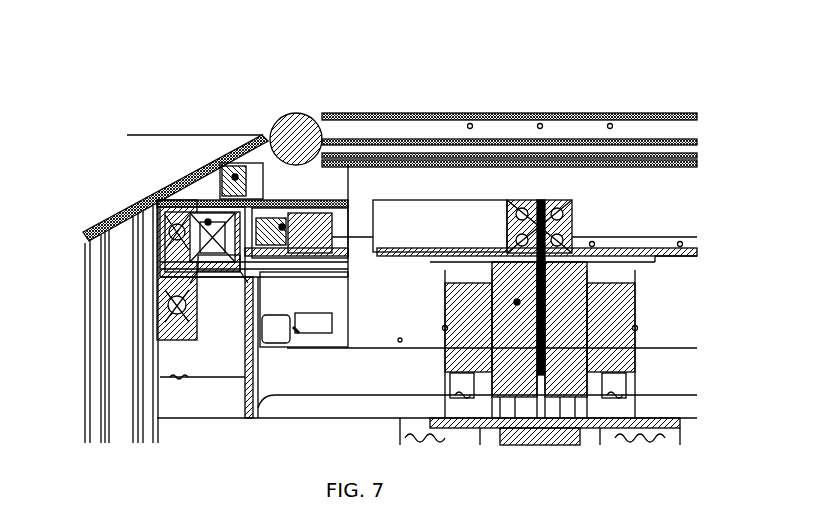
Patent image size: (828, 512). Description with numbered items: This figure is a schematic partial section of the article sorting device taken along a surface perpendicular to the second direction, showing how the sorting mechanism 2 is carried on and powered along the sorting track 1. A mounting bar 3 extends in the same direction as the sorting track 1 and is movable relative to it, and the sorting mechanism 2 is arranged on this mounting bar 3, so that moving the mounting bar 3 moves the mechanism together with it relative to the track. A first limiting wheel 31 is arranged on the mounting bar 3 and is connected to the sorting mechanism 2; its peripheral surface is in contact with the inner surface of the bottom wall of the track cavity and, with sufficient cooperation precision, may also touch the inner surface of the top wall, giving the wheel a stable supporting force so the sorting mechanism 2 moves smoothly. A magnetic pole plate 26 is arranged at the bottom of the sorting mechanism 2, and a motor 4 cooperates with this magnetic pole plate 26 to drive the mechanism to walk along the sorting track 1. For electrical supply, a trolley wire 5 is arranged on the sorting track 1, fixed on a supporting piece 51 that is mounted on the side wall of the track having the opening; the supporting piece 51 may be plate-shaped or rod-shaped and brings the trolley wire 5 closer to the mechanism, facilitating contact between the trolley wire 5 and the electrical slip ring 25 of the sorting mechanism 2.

The sorting track 1 is at (150, 197).
The sorting mechanism 2 is at (315, 118).
The mounting bar 3 is at (202, 140).
The motor 4 is at (509, 200).
The trolley wire 5 is at (232, 172).
The electrical slip ring 25 is at (278, 205).
The magnetic pole plate 26 is at (557, 200).
The first limiting wheel 31 is at (228, 260).
The supporting piece 51 is at (243, 203).